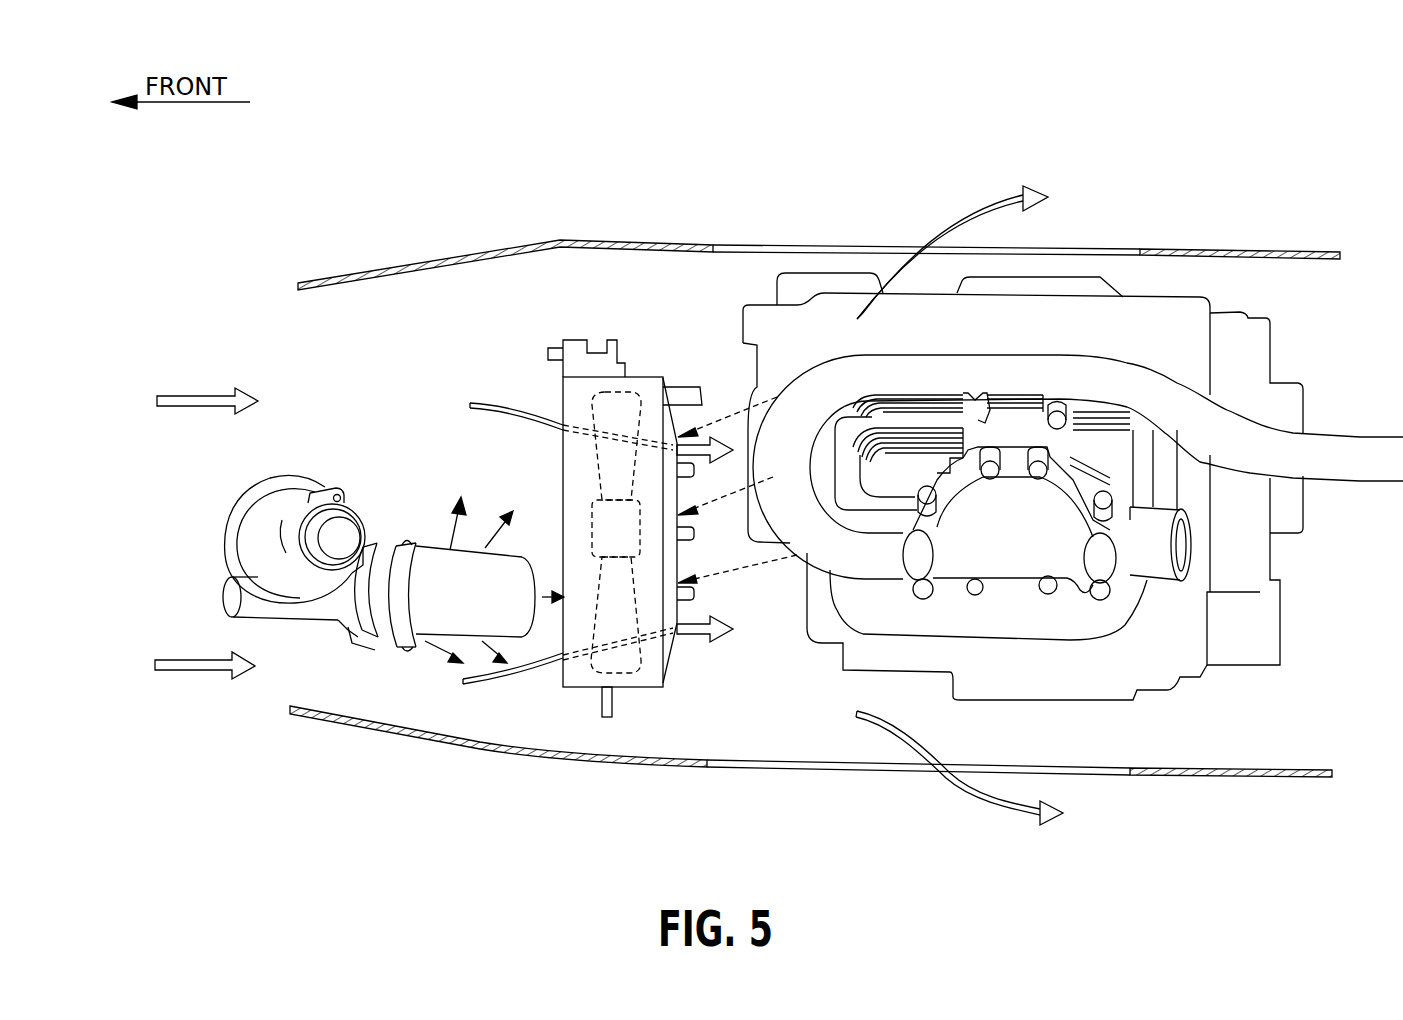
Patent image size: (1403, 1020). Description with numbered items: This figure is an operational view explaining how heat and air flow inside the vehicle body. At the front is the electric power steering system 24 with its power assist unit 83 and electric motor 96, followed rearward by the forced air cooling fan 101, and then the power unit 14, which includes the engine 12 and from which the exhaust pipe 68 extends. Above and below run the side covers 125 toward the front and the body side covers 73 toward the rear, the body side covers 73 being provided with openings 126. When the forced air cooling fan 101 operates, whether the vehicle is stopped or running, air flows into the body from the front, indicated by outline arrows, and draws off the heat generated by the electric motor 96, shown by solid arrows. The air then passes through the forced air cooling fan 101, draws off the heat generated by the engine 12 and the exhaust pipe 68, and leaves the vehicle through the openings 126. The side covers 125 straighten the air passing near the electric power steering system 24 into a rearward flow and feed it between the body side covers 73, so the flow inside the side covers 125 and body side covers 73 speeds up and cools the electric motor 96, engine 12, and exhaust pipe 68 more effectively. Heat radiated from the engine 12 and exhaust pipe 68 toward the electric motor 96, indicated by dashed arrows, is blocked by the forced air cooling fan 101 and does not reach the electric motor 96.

The engine 12 is at (1080, 603).
The power unit 14 is at (1273, 312).
The electric power steering system 24 is at (218, 540).
The exhaust pipe 68 is at (806, 403).
The body side cover 73 is at (1188, 253).
The power assist unit 83 is at (373, 657).
The electric motor 96 is at (443, 610).
The forced air cooling fan 101 is at (637, 376).
The side cover 125 is at (448, 262).
The opening 126 is at (887, 246).